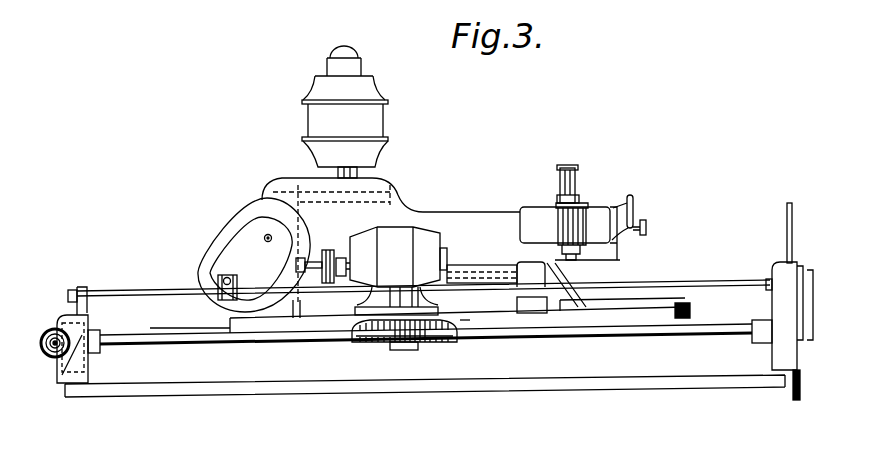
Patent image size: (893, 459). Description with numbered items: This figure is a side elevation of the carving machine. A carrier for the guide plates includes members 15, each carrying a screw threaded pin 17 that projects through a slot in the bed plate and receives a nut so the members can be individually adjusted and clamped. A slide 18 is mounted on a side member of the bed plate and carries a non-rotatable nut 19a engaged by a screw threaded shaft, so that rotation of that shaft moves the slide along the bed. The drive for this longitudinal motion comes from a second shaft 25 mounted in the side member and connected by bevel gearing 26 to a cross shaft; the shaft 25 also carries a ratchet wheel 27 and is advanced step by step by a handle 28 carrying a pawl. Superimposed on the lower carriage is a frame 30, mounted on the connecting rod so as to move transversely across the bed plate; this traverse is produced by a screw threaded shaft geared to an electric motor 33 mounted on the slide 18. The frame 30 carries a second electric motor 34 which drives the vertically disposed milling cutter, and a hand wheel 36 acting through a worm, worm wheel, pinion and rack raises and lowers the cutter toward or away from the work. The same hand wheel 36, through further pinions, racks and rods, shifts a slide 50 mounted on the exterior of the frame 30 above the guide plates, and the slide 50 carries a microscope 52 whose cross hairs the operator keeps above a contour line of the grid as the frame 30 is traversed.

The carrier member 15 is at (645, 305).
The screw threaded pin 17 is at (693, 318).
The slide 18 is at (477, 307).
The non-rotatable nut 19a is at (400, 350).
The second shaft 25 is at (187, 344).
The bevel gearing 26 is at (62, 362).
The ratchet wheel 27 is at (791, 383).
The handle 28 is at (788, 230).
The frame 30 is at (460, 225).
The electric motor 33 is at (371, 271).
The electric motor 34 is at (345, 112).
The hand wheel 36 is at (636, 206).
The slide 50 is at (527, 215).
The microscope 52 is at (569, 180).